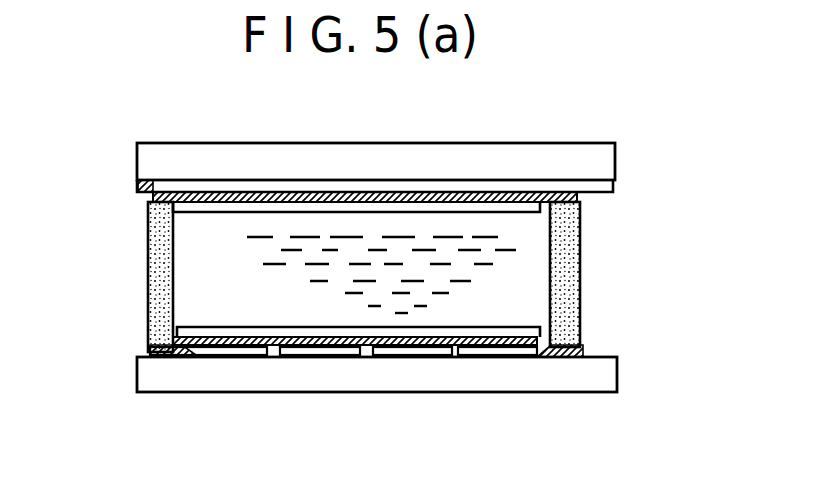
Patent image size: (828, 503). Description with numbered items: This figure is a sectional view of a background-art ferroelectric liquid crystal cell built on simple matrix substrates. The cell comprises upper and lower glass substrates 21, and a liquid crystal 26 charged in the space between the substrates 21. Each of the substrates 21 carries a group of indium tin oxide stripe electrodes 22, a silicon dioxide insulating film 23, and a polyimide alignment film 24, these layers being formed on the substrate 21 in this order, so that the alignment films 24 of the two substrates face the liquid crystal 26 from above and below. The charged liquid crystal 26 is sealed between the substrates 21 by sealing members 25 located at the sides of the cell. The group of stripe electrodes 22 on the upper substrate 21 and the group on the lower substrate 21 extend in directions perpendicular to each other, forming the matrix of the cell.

The glass substrate 21 is at (152, 377).
The ITO stripe electrode 22 is at (147, 351).
The insulating film 23 is at (170, 343).
The alignment film 24 is at (172, 333).
The sealing member 25 is at (160, 283).
The liquid crystal 26 is at (188, 260).